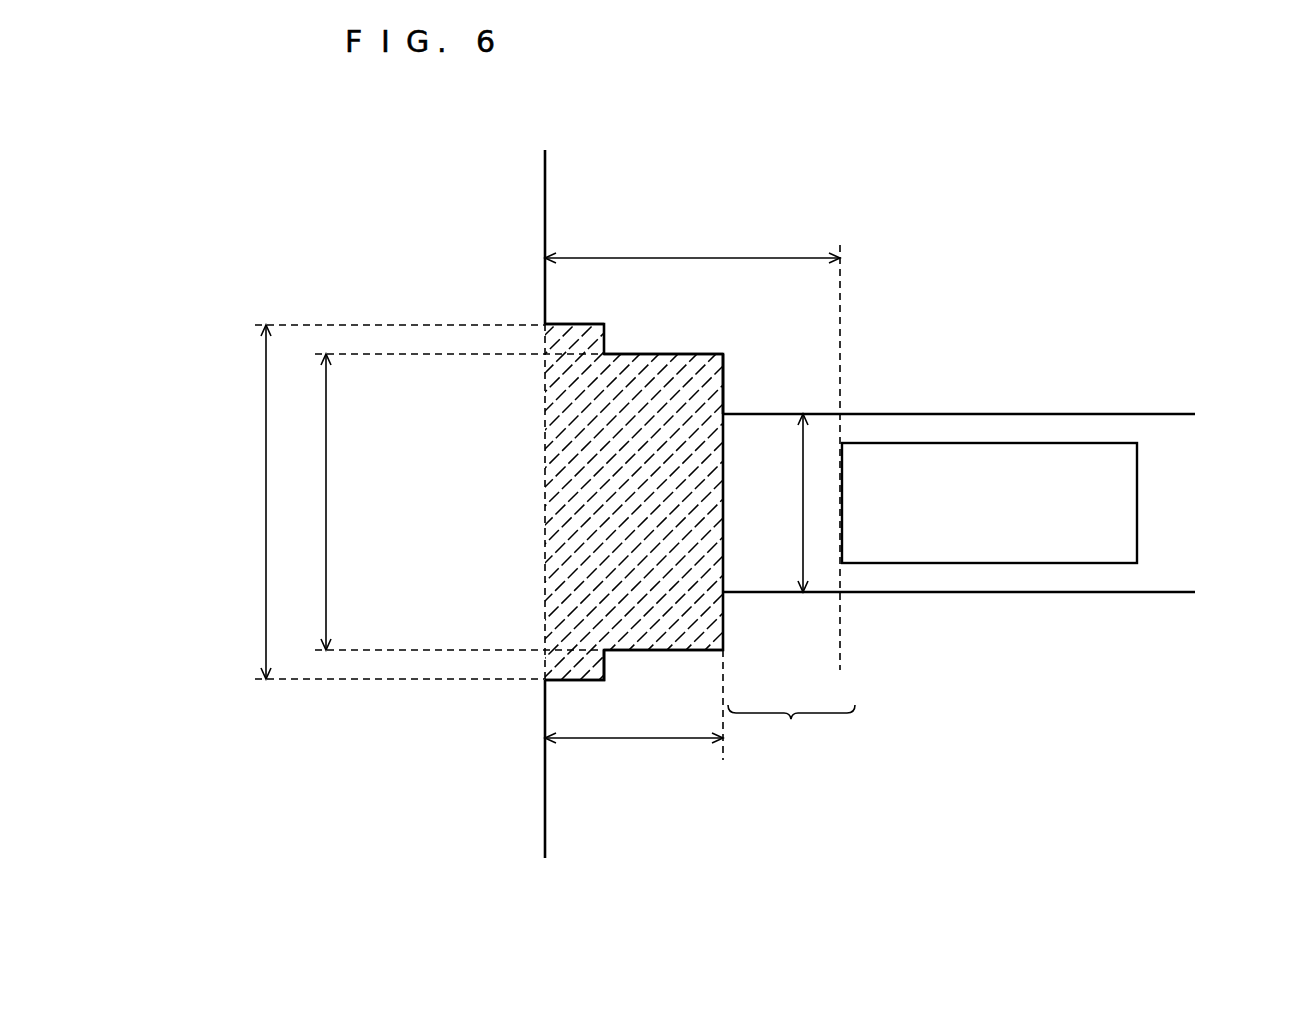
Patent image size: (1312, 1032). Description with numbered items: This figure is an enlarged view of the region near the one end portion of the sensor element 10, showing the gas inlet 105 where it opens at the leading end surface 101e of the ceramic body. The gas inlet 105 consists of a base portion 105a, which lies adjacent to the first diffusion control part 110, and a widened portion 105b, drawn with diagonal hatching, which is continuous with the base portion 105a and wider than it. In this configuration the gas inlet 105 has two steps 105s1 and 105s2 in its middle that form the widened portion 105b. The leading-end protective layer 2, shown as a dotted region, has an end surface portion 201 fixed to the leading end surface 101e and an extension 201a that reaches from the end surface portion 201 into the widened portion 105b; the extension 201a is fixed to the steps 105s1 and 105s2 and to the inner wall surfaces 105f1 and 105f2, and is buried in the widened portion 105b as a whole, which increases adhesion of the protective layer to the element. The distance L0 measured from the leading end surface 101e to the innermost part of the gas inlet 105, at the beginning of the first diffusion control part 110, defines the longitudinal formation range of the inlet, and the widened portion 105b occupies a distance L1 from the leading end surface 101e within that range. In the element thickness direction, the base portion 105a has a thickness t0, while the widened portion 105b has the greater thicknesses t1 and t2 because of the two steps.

The leading-end protective layer 2 is at (469, 476).
The end surface portion 201 is at (432, 215).
The leading end surface 101e is at (545, 205).
The sensor element 10 is at (990, 170).
The extension 201a is at (708, 458).
The step 105s2 is at (605, 342).
The step 105s1 is at (725, 376).
The inner wall surface 105f2 is at (595, 664).
The inner wall surface 105f1 is at (692, 636).
The widened portion 105b is at (703, 613).
The base portion 105a is at (815, 585).
The gas inlet 105 is at (791, 729).
The first diffusion control part 110 is at (1123, 428).
The distance L0 is at (692, 446).
The distance L1 is at (634, 717).
The thickness t0 is at (788, 503).
The thickness t1 is at (449, 502).
The thickness t2 is at (390, 502).